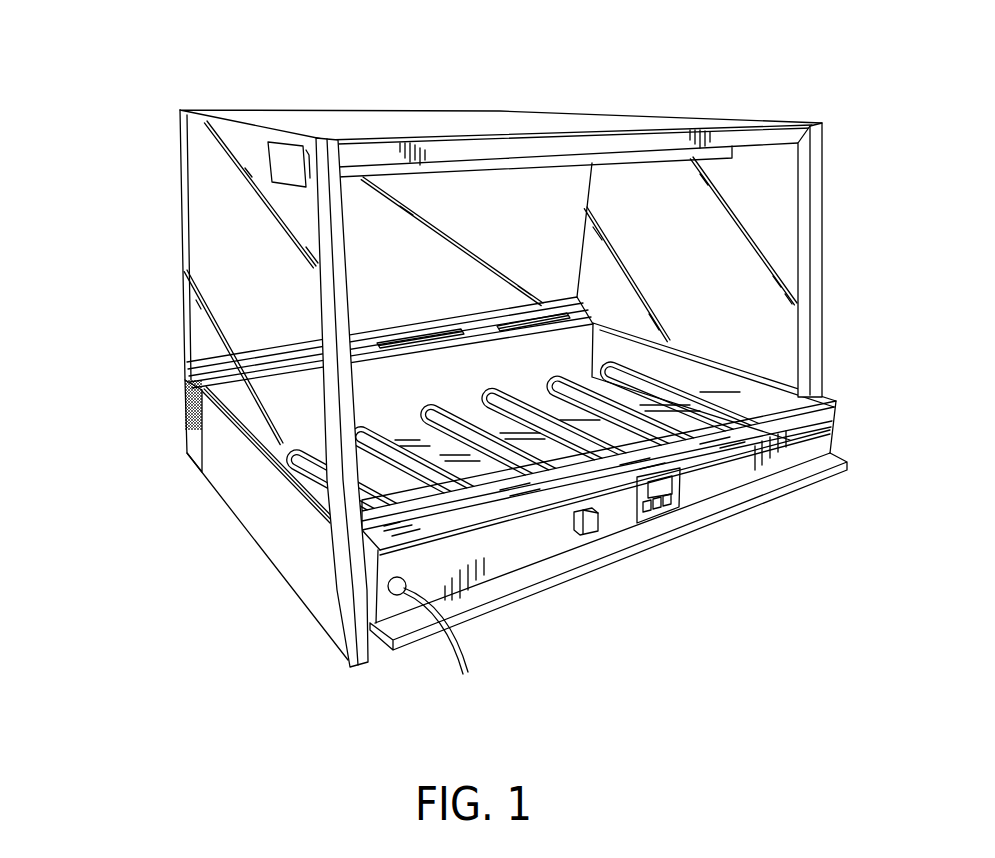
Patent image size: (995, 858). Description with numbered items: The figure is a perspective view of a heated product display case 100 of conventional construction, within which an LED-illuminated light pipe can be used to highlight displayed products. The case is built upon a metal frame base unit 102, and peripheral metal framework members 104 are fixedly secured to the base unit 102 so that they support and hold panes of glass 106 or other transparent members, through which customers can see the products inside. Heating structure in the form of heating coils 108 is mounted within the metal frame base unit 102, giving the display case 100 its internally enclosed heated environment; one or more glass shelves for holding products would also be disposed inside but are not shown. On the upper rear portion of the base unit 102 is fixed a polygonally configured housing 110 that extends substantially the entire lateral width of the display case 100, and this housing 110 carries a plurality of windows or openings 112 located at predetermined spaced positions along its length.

The heated product display case 100 is at (147, 477).
The metal frame base unit 102 is at (287, 550).
The peripheral metal framework members 104 is at (470, 148).
The panes of glass 106 is at (210, 229).
The heating coils 108 is at (522, 443).
The polygonally configured housing 110 is at (188, 375).
The windows or openings 112 is at (275, 368).